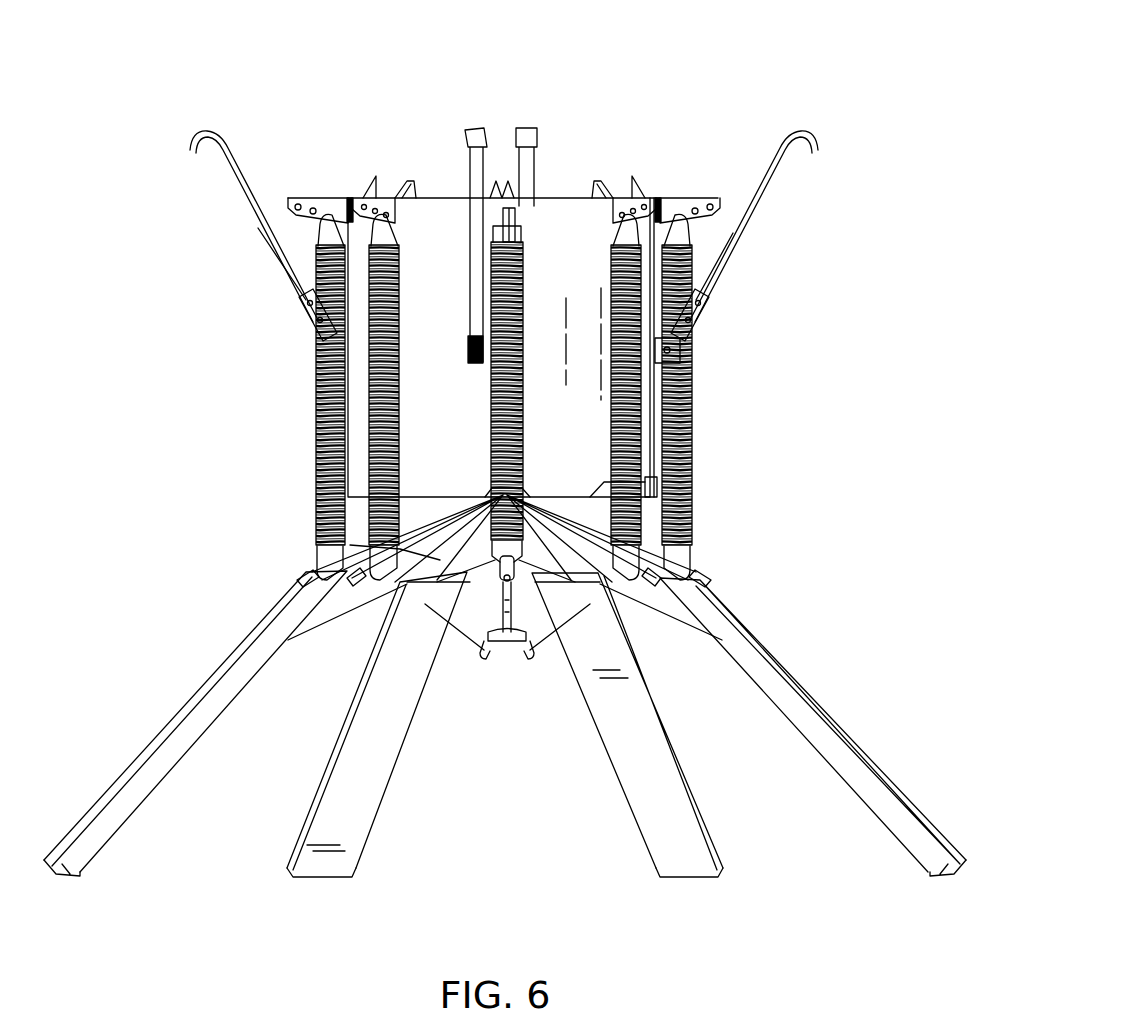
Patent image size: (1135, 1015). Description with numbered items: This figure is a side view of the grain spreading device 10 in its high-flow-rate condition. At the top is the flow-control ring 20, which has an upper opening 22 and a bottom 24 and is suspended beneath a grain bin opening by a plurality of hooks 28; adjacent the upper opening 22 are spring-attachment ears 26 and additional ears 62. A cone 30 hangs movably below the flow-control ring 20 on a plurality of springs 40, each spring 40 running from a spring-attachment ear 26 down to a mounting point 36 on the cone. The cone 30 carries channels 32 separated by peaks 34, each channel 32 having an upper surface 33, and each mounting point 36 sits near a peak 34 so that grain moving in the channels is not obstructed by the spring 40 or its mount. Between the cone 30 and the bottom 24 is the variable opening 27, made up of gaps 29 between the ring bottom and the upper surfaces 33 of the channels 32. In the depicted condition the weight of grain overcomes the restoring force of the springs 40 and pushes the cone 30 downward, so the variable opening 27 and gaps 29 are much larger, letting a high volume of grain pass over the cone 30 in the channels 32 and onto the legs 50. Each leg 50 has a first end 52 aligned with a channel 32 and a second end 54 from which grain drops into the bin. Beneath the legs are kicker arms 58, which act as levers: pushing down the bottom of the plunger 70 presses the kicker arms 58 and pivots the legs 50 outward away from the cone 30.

The grain spreading device 10 is at (729, 50).
The flow-control ring 20 is at (452, 210).
The upper opening 22 is at (561, 192).
The bottom 24 is at (690, 500).
The spring-attachment ear 26 is at (335, 205).
The variable opening 27 is at (690, 533).
The hooks 28 is at (250, 200).
The gaps 29 is at (574, 507).
The cone 30 is at (442, 522).
The channels 32 is at (448, 557).
The upper surface 33 is at (432, 522).
The peaks 34 is at (548, 527).
The mounting point 36 is at (310, 578).
The springs 40 is at (368, 447).
The legs 50 is at (195, 735).
The first end 52 is at (296, 597).
The second end 54 is at (118, 867).
The kicker arm 58 is at (474, 645).
The mounting bracket 62 is at (365, 208).
The plunger 70 is at (500, 603).